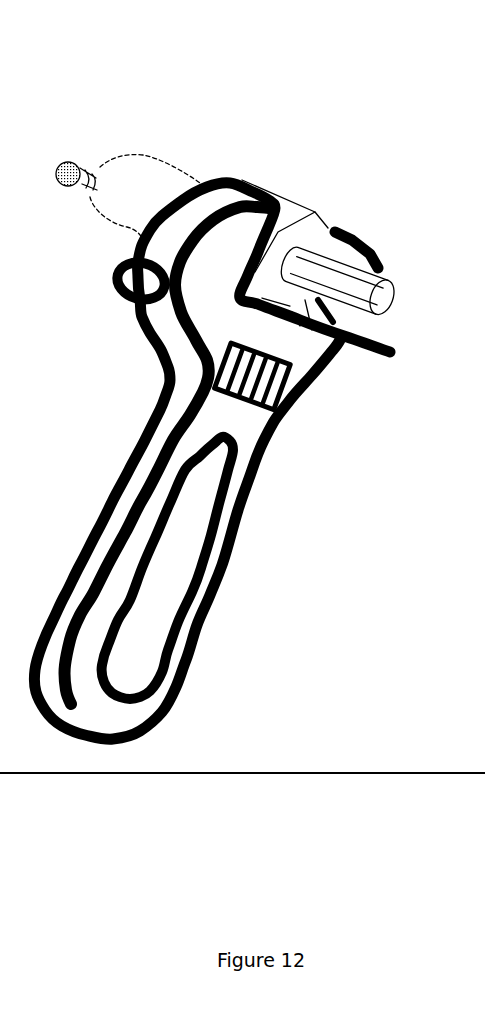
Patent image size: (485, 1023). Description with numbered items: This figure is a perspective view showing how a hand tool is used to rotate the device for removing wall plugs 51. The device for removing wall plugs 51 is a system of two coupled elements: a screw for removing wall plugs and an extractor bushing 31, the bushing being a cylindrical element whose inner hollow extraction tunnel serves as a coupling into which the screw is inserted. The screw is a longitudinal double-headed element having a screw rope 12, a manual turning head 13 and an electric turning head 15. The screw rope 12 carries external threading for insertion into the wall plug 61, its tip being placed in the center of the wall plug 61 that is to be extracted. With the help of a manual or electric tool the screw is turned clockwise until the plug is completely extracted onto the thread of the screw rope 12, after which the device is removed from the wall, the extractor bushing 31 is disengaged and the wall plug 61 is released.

The device for removing wall plugs 51 is at (215, 135).
The manual turning head 13 is at (260, 186).
The electric turning head 15 is at (366, 248).
The extractor bushing 31 is at (168, 193).
The screw rope 12 is at (83, 190).
The wall plug 61 is at (58, 160).